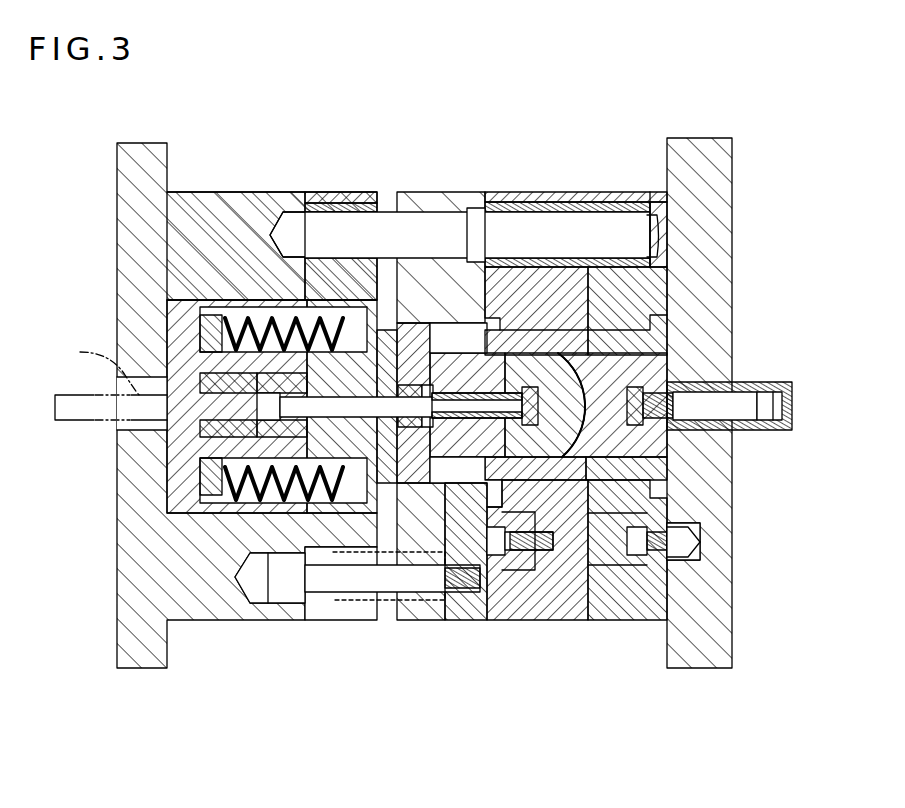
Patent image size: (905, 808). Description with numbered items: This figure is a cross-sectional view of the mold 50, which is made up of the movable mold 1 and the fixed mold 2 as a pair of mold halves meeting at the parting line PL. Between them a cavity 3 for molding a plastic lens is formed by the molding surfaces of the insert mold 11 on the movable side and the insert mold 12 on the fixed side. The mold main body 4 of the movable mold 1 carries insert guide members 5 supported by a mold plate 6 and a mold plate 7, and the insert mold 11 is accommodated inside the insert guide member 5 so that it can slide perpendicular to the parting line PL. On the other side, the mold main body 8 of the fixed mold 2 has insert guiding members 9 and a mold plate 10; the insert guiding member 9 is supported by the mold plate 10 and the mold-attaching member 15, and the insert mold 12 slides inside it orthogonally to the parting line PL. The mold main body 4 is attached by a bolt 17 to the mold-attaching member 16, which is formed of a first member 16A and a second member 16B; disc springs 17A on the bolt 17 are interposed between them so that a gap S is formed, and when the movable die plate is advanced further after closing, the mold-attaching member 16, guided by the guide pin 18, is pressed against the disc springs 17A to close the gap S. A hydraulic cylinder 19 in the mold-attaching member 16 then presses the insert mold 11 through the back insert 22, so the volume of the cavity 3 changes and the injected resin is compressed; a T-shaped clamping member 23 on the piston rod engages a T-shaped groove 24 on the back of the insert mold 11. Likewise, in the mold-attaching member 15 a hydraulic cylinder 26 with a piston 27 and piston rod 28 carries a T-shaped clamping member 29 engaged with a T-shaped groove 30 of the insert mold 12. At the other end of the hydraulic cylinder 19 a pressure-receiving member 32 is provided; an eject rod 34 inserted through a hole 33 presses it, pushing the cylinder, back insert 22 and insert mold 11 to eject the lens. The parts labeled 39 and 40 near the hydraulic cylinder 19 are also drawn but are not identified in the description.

The movable mold 1 is at (530, 430).
The fixed mold 2 is at (726, 445).
The cavity 3 is at (660, 445).
The mold main body 4 is at (508, 600).
The insert guide member 5 is at (557, 350).
The mold plate 6 is at (570, 597).
The mold plate 7 is at (467, 598).
The mold main body 8 is at (637, 598).
The insert guiding member 9 is at (623, 340).
The mold plate 10 is at (606, 597).
The insert mold 11 is at (530, 353).
The insert mold 12 is at (610, 350).
The mold-attaching member 15 is at (700, 613).
The mold-attaching member 16 is at (190, 698).
The first member 16A is at (215, 598).
The second member 16B is at (313, 612).
The bolt 17 is at (318, 578).
The disc spring 17A is at (352, 601).
The guide pin 18 is at (445, 238).
The hydraulic cylinder 19 is at (247, 430).
The back insert 22 is at (456, 440).
The T-shaped clamping member 23 is at (557, 520).
The T-shaped groove 24 is at (665, 345).
The hydraulic cylinder 26 is at (780, 400).
The piston 27 is at (770, 402).
The piston rod 28 is at (735, 395).
The T-shaped clamping member 29 is at (645, 430).
The T-shaped groove 30 is at (603, 360).
The pressure-receiving member 32 is at (178, 338).
The hole 33 is at (152, 436).
The eject rod 34 is at (92, 368).
The spring seat 39 is at (237, 325).
The compression spring 40 is at (273, 320).
The mold 50 is at (264, 439).
The gap S is at (355, 133).
The parting line PL is at (588, 620).